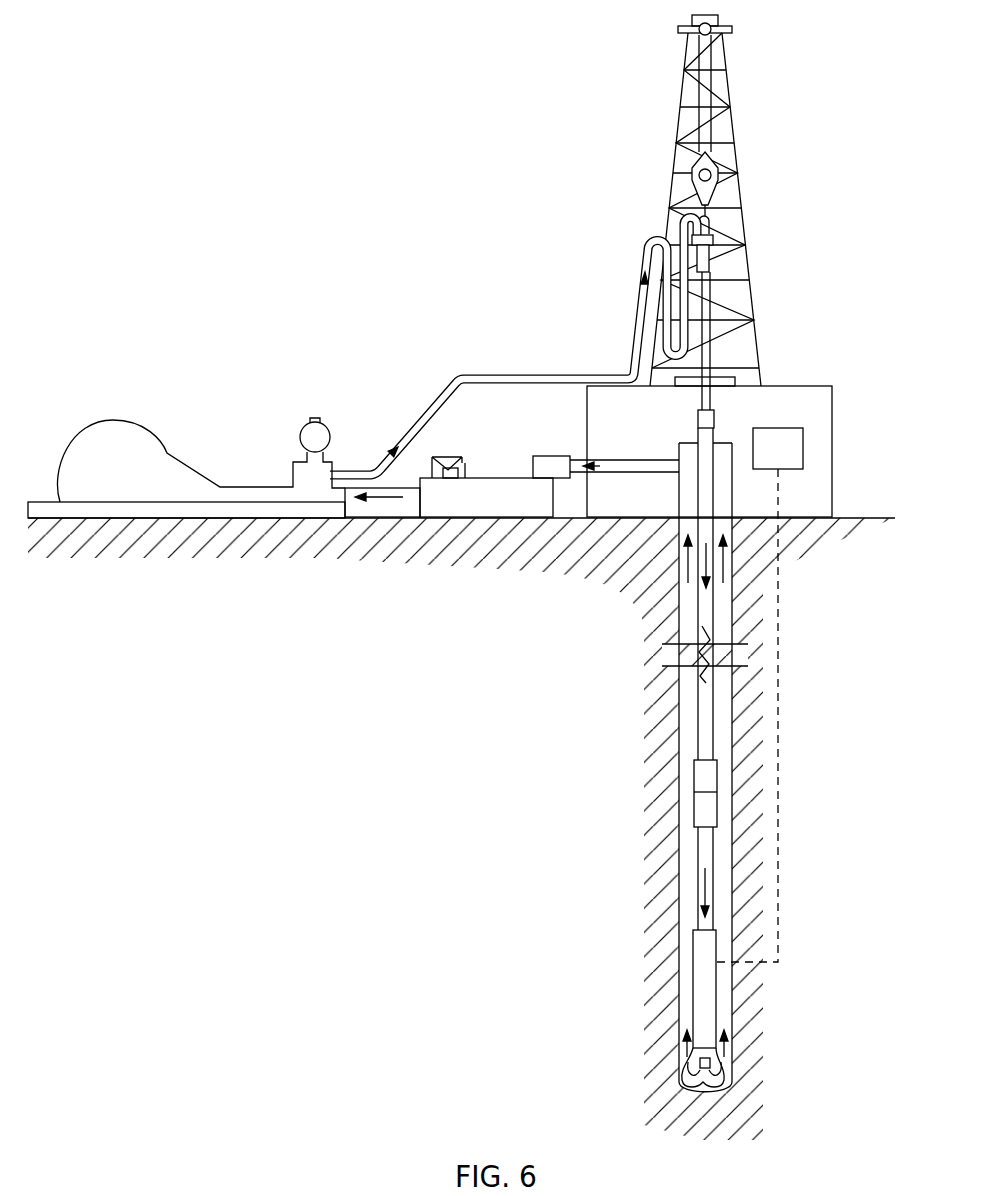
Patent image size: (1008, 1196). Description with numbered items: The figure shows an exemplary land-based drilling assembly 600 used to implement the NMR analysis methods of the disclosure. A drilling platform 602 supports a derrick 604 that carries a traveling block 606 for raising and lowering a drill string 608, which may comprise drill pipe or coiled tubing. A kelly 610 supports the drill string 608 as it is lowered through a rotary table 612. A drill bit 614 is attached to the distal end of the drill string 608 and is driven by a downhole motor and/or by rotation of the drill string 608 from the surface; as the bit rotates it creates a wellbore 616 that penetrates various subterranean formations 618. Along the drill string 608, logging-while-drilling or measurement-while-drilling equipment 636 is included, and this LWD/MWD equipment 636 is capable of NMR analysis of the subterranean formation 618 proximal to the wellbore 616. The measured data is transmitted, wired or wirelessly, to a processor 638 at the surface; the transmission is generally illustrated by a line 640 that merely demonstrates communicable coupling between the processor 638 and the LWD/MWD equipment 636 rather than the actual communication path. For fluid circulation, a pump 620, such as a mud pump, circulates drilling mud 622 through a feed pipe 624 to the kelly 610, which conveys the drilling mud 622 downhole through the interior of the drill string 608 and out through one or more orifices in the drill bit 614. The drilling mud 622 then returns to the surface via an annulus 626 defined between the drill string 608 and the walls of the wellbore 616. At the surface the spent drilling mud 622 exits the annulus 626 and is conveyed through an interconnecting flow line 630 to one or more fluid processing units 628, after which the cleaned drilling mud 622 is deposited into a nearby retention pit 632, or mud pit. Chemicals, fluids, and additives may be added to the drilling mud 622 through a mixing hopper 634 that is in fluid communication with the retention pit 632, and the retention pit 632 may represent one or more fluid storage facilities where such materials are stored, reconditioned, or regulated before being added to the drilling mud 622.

The drilling assembly 600 is at (416, 99).
The drilling platform 602 is at (832, 400).
The derrick 604 is at (732, 117).
The traveling block 606 is at (718, 160).
The drill string 608 is at (705, 628).
The kelly 610 is at (705, 293).
The rotary table 612 is at (735, 380).
The drill bit 614 is at (730, 1068).
The wellbore 616 is at (732, 722).
The subterranean formation 618 is at (556, 755).
The pump 620 is at (123, 478).
The drilling mud 622 is at (358, 471).
The feed pipe 624 is at (455, 378).
The annulus 626 is at (720, 884).
The fluid processing unit 628 is at (546, 457).
The flow line 630 is at (662, 470).
The retention pit 632 is at (495, 508).
The mixing hopper 634 is at (437, 478).
The LWD/MWD equipment 636 is at (715, 998).
The processor 638 is at (793, 458).
The line 640 is at (780, 815).